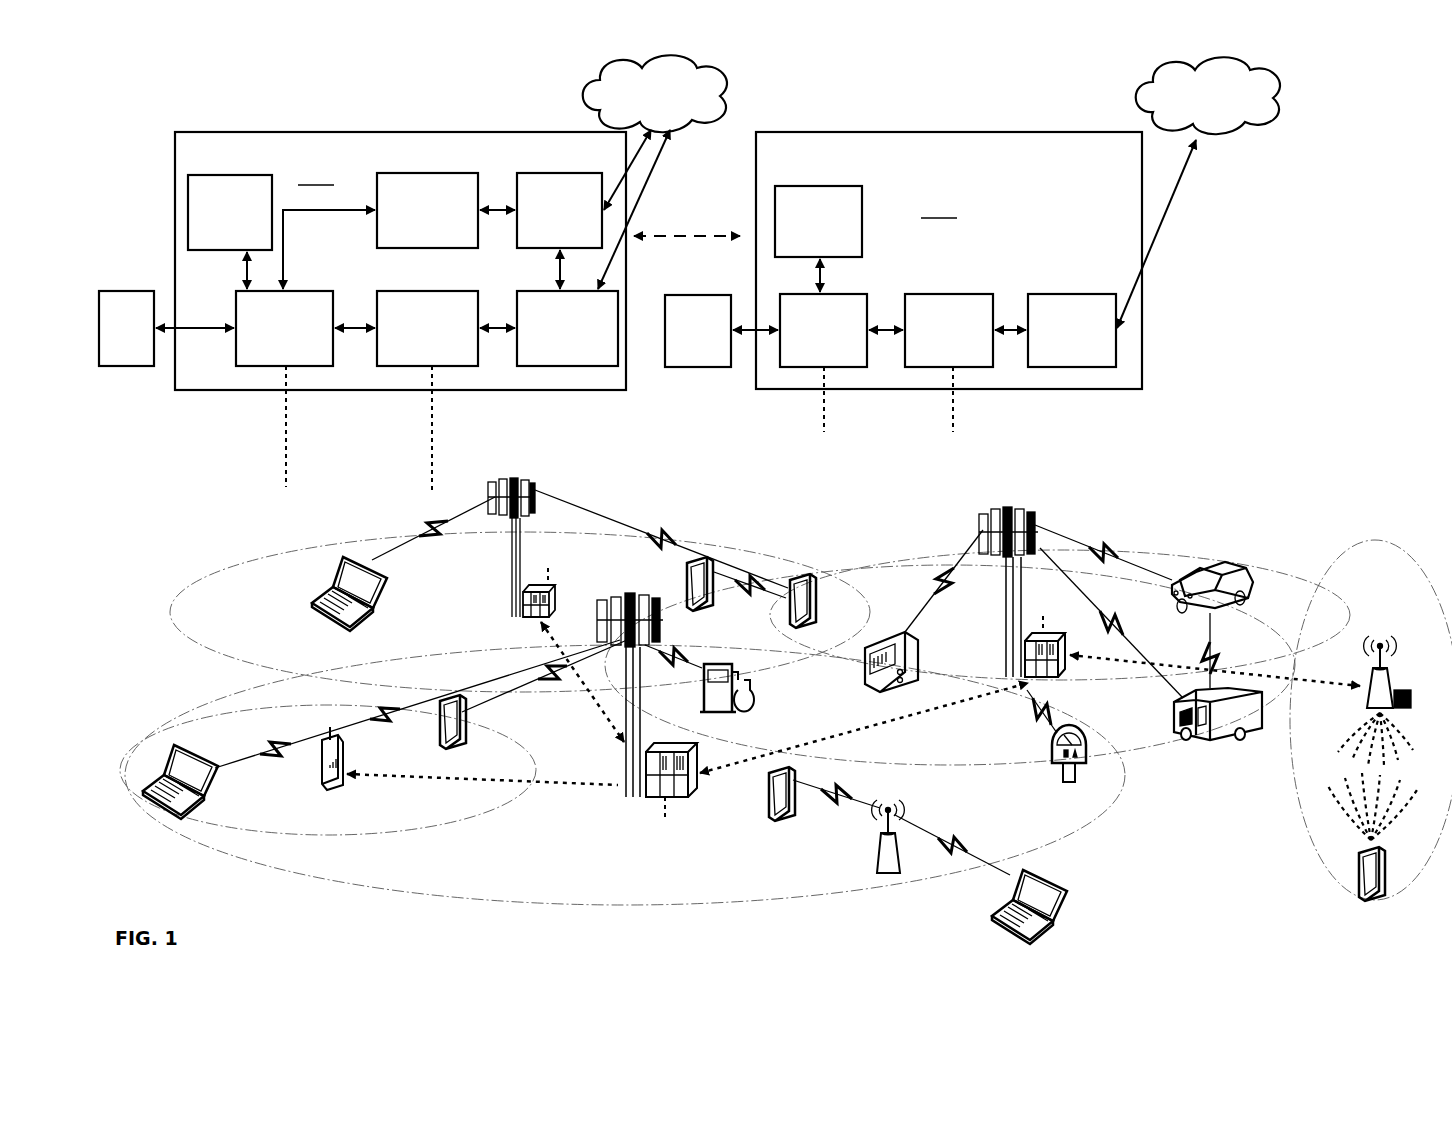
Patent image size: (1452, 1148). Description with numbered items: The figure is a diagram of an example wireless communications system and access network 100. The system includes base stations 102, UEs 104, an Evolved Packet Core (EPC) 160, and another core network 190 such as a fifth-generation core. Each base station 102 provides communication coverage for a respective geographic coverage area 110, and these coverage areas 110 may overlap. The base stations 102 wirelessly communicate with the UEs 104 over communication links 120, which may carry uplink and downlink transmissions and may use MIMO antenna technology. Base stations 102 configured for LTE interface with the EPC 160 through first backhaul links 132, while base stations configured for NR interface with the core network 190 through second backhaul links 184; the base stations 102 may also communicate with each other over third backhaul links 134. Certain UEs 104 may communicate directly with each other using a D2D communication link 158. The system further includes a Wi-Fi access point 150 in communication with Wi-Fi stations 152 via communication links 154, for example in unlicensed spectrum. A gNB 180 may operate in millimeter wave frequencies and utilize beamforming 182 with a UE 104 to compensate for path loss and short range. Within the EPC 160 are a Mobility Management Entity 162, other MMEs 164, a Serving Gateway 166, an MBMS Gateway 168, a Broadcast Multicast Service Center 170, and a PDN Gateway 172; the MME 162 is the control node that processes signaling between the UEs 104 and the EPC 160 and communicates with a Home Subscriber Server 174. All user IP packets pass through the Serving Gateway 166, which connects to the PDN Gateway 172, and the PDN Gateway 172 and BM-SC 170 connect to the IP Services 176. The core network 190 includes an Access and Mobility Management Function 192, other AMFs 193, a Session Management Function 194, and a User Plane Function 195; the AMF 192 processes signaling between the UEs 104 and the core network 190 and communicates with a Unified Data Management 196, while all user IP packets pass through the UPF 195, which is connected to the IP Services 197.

The wireless communications system and access network 100 is at (170, 108).
The base station 102 is at (512, 598).
The UE 104 is at (358, 632).
The geographic coverage area 110 is at (223, 674).
The communication link 120 is at (434, 524).
The first backhaul link 132 is at (288, 400).
The third backhaul link 134 is at (590, 718).
The Wi-Fi access point 150 is at (886, 876).
The Wi-Fi station 152 is at (761, 789).
The communication link 154 is at (839, 794).
The D2D communication link 158 is at (756, 608).
The Evolved Packet Core 160 is at (317, 161).
The Mobility Management Entity 162 is at (298, 291).
The other MMEs 164 is at (225, 176).
The Serving Gateway 166 is at (448, 291).
The MBMS Gateway 168 is at (440, 164).
The Broadcast Multicast Service Center 170 is at (550, 174).
The PDN Gateway 172 is at (554, 291).
The Home Subscriber Server 174 is at (130, 292).
The IP Services 176 is at (730, 98).
The gNB 180 is at (1386, 626).
The beamforming 182 is at (1344, 758).
The second backhaul link 184 is at (826, 396).
The core network 190 is at (949, 260).
The Access and Mobility Management Function 192 is at (840, 294).
The other AMFs 193 is at (814, 186).
The Session Management Function 194 is at (965, 294).
The User Plane Function 195 is at (1096, 293).
The Unified Data Management 196 is at (714, 294).
The IP Services 197 is at (1276, 95).